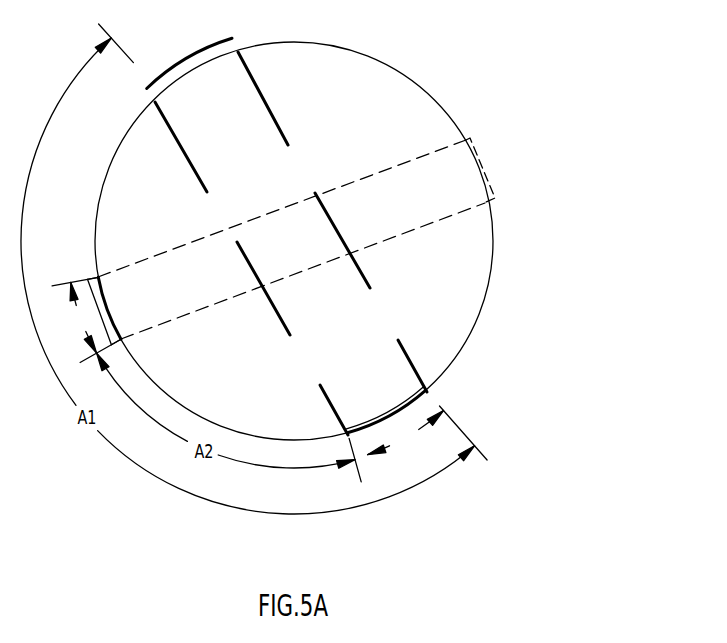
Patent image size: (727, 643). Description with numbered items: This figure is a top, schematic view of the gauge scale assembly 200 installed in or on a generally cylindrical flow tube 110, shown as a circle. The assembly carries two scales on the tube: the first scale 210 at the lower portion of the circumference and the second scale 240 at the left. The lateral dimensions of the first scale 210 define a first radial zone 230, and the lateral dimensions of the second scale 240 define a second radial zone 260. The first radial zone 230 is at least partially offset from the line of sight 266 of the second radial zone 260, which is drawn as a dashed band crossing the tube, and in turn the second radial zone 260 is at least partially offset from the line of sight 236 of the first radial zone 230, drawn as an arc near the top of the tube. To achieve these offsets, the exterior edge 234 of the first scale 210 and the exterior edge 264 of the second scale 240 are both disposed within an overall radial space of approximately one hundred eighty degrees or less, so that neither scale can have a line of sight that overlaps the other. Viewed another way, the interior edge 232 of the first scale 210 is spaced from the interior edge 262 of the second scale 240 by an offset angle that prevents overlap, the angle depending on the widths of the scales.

The flow tube 110 is at (392, 70).
The gauge scale assembly 200 is at (518, 290).
The first scale 210 is at (387, 415).
The first radial zone 230 is at (406, 434).
The interior edge of the first scale 232 is at (348, 436).
The exterior edge of the first scale 234 is at (428, 392).
The line of sight of the first radial zone 236 is at (197, 108).
The second scale 240 is at (96, 310).
The second radial zone 260 is at (76, 317).
The interior edge of the second scale 262 is at (122, 340).
The exterior edge of the second scale 264 is at (95, 277).
The line of sight of the second radial zone 266 is at (452, 180).